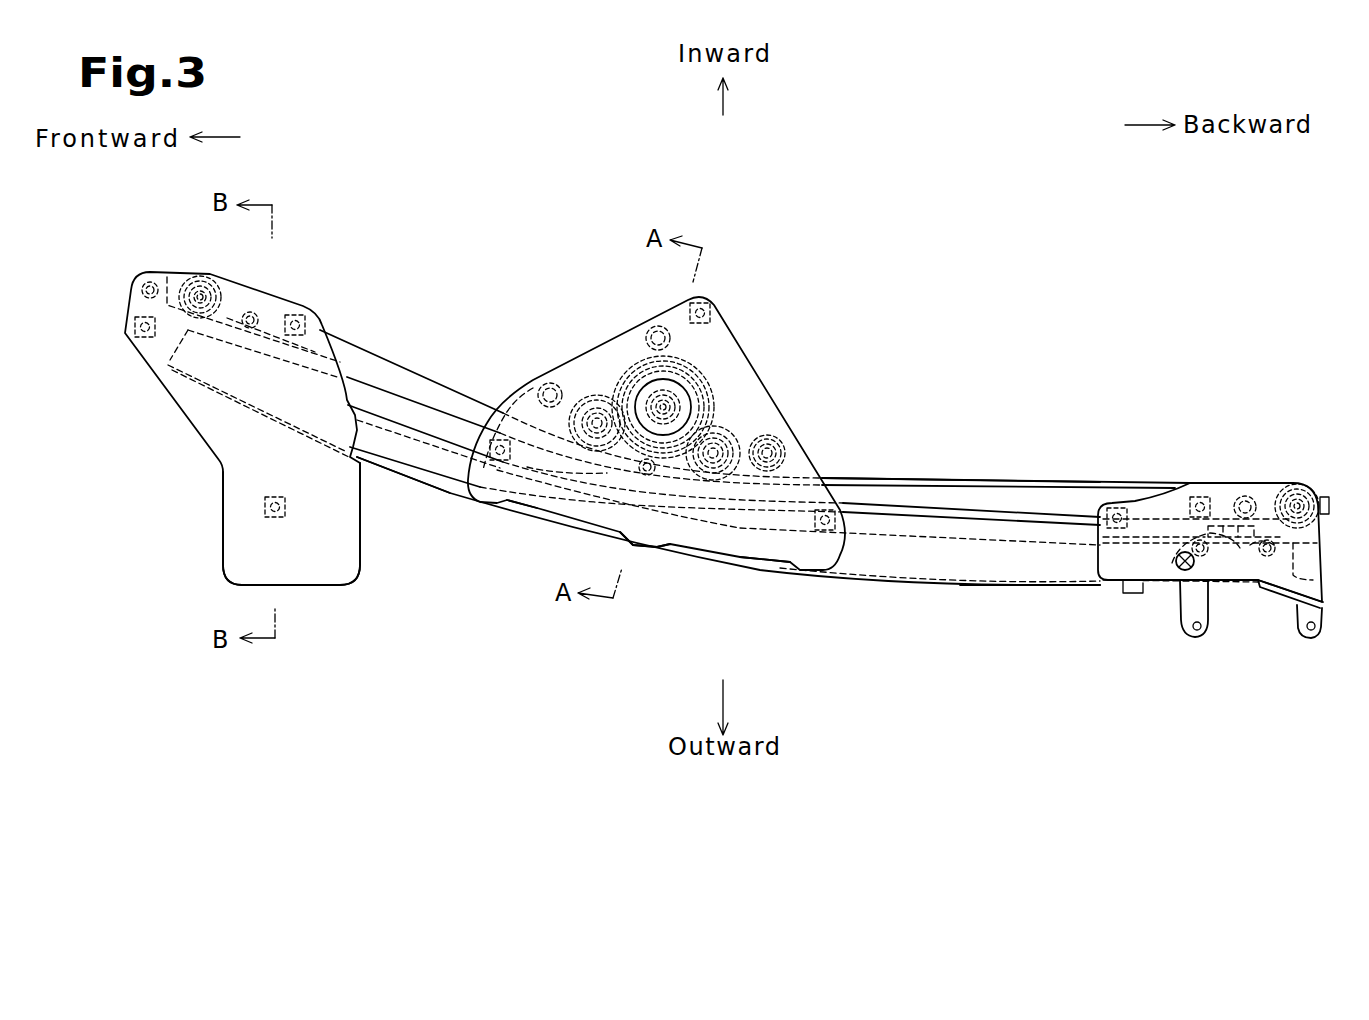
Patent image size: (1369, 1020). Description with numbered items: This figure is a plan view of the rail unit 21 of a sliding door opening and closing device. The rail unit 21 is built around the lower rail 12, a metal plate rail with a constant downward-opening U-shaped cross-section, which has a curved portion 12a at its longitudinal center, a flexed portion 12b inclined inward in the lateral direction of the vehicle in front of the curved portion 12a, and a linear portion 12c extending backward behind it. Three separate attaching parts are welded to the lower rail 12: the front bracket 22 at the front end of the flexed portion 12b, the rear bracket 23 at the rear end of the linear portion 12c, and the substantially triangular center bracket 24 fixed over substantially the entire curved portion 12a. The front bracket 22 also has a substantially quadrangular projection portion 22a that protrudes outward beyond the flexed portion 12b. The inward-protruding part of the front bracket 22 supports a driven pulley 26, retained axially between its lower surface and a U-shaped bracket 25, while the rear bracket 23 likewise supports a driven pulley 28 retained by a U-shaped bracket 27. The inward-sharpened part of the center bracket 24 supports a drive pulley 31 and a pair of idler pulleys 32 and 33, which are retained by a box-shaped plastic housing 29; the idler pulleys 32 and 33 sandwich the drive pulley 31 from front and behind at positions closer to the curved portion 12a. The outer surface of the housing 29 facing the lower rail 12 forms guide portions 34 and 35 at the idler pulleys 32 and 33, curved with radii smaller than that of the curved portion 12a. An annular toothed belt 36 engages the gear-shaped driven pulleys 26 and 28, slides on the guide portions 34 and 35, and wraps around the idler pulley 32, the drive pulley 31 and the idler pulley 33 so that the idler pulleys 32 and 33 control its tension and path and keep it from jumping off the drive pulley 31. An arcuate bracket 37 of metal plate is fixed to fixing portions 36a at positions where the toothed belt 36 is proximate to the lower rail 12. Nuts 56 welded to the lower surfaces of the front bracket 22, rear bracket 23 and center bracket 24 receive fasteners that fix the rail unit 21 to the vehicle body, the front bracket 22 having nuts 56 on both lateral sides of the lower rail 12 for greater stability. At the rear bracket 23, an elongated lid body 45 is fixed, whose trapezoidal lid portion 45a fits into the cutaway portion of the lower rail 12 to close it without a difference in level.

The lower rail 12 is at (980, 588).
The curved portion 12a is at (643, 550).
The flexed portion 12b is at (380, 477).
The linear portion 12c is at (1050, 588).
The rail unit 21 is at (1073, 353).
The front bracket 22 is at (320, 353).
The projection portion 22a is at (313, 573).
The rear bracket 23 is at (1163, 508).
The center bracket 24 is at (743, 358).
The bracket 25 is at (165, 273).
The driven pulley 26 is at (192, 275).
The bracket 27 is at (1247, 498).
The driven pulley 28 is at (1303, 487).
The housing 29 is at (740, 413).
The drive pulley 31 is at (625, 362).
The idler pulley 32 is at (587, 388).
The idler pulley 33 is at (775, 435).
The guide portion 34 is at (557, 467).
The guide portion 35 is at (770, 520).
The toothed belt 36 is at (1043, 479).
The fixing portion 36a is at (1223, 545).
The arcuate bracket 37 is at (1310, 641).
The lid body 45 is at (1277, 598).
The lid portion 45a is at (1170, 587).
The nut 56 is at (273, 313).